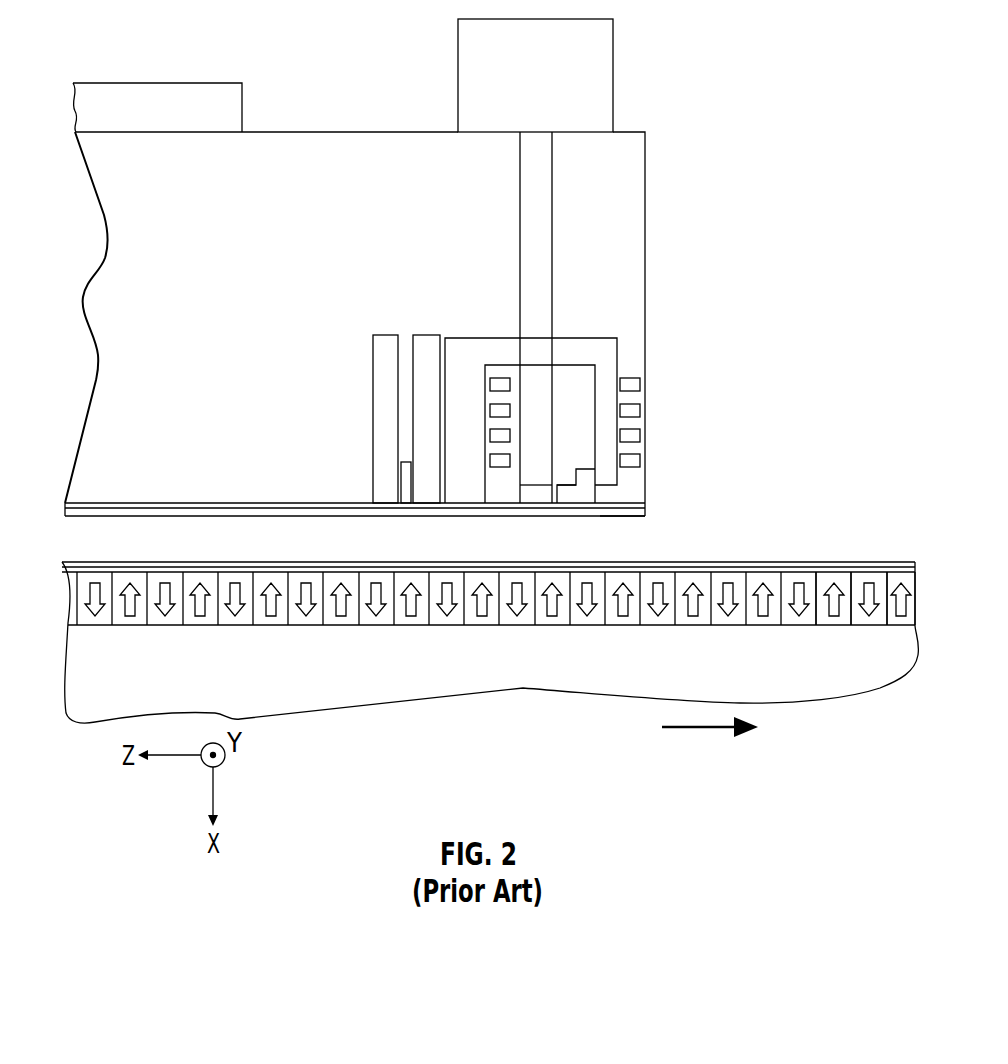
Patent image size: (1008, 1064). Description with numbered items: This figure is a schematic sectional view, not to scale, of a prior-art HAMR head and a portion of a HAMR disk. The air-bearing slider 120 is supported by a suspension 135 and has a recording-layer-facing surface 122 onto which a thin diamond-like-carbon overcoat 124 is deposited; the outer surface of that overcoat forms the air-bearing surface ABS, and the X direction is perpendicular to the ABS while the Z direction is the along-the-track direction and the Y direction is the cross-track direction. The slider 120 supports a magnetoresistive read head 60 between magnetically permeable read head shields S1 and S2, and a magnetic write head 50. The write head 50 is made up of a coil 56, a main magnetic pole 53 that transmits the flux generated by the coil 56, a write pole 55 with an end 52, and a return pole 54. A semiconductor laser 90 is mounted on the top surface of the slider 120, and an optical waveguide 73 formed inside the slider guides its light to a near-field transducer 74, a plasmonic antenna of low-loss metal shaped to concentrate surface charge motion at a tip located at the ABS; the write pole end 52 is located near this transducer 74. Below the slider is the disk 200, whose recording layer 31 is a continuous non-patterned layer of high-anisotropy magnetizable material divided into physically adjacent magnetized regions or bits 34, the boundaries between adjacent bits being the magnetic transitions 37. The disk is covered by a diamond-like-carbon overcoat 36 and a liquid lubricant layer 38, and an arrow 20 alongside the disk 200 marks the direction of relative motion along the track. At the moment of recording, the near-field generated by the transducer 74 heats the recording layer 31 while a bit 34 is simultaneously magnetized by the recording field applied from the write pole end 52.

The air-bearing slider 120 is at (110, 397).
The suspension 135 is at (235, 90).
The semiconductor laser 90 is at (600, 76).
The recording-layer-facing surface 122 is at (180, 503).
The overcoat 124 is at (215, 517).
The air-bearing surface ABS is at (625, 516).
The read head shield S1 is at (386, 416).
The read head shield S2 is at (428, 334).
The magnetoresistive read head 60 is at (400, 487).
The magnetic write head 50 is at (461, 274).
The return pole 54 is at (464, 339).
The main magnetic pole 53 is at (608, 360).
The optical waveguide 73 is at (537, 275).
The near-field transducer 74 is at (532, 485).
The write pole end 52 is at (570, 484).
The write pole 55 is at (583, 497).
The coil 56 is at (483, 370).
The disk 200 is at (800, 690).
The liquid lubricant layer 38 is at (743, 563).
The overcoat 36 is at (810, 571).
The recording layer 31 is at (48, 572).
The bits 34 is at (868, 583).
The magnetic transitions 37 is at (886, 652).
The medium motion direction 20 is at (690, 735).